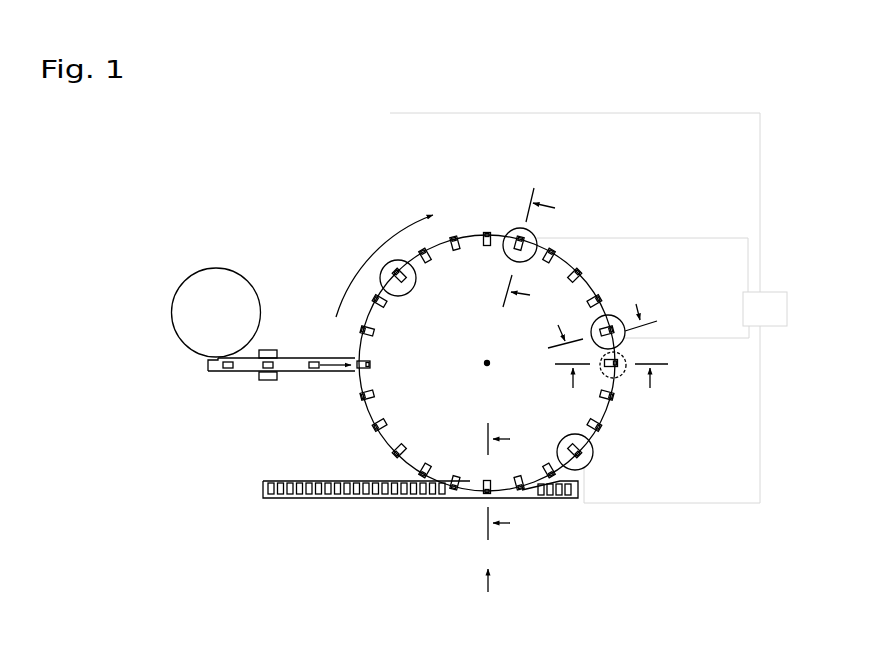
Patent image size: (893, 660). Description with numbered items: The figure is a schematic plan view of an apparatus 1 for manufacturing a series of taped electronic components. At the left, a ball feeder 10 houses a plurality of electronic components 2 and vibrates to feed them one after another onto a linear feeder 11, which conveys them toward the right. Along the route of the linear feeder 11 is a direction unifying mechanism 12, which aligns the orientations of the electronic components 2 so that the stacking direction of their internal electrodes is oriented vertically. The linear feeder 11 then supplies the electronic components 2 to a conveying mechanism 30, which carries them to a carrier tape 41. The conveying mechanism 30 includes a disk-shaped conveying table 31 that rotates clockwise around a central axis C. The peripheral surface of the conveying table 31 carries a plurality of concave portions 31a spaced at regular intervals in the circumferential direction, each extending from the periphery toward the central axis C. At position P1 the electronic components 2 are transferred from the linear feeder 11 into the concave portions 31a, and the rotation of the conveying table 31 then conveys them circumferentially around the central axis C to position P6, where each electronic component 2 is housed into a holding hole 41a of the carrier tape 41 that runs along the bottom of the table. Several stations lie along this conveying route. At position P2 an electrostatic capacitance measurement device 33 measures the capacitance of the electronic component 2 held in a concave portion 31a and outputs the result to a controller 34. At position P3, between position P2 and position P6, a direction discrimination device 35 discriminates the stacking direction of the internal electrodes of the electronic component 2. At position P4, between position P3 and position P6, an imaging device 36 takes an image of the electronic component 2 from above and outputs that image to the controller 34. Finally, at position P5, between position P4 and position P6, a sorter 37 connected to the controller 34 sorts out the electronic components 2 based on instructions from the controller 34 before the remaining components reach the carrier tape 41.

The apparatus for manufacturing a series of taped electronic components 1 is at (645, 203).
The electronic component 2 is at (229, 372).
The ball feeder 10 is at (217, 268).
The linear feeder 11 is at (313, 372).
The direction unifying mechanism 12 is at (271, 347).
The conveying mechanism 30 is at (456, 226).
The conveying table 31 is at (376, 438).
The concave portion 31a is at (364, 421).
The electrostatic capacitance measurement device 33 is at (404, 296).
The controller 34 is at (766, 328).
The direction discrimination device 35 is at (537, 240).
The imaging device 36 is at (614, 318).
The sorter 37 is at (592, 464).
The carrier tape 41 is at (394, 500).
The holding hole 41a is at (339, 498).
The central axis C is at (485, 360).
The position P1 is at (375, 367).
The position P2 is at (410, 283).
The position P3 is at (517, 232).
The position P4 is at (620, 333).
The position P5 is at (588, 457).
The position P6 is at (483, 477).